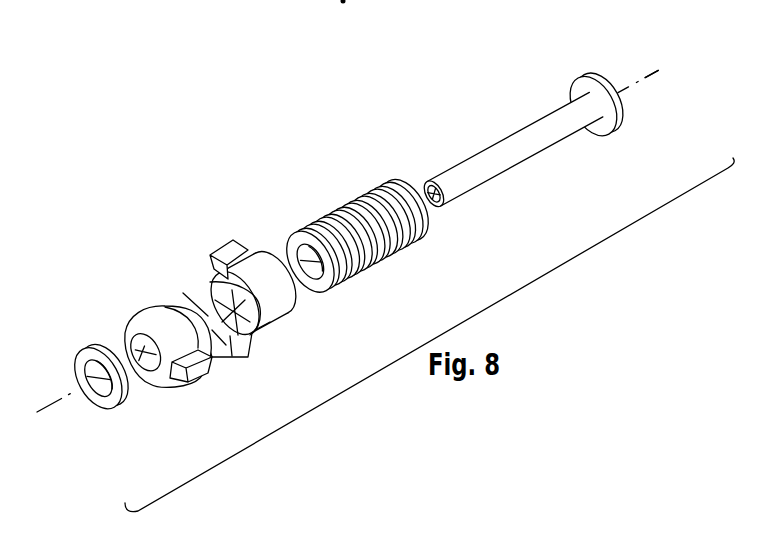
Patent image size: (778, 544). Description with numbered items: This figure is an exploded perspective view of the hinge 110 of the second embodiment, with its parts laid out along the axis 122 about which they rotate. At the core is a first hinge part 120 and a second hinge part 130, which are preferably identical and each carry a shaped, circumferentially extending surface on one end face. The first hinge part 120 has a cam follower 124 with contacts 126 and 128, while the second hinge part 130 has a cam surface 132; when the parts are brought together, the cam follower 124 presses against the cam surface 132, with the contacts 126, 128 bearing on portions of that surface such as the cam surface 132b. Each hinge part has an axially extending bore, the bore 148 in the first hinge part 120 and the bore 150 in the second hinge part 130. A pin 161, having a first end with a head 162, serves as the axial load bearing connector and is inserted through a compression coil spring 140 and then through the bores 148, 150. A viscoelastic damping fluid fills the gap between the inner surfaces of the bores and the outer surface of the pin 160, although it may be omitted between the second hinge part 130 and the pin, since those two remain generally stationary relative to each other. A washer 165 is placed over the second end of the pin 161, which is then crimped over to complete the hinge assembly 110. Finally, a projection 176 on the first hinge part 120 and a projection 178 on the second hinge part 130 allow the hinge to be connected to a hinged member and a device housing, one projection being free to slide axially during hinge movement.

The hinge 110 is at (309, 195).
The first hinge part 120 is at (277, 322).
The axis 122 is at (657, 72).
The cam follower 124 is at (250, 333).
The contact 126 is at (210, 283).
The contact 128 is at (228, 340).
The second hinge part 130 is at (140, 347).
The cam surface 132 is at (183, 293).
The cam surface 132b is at (215, 352).
The compression coil spring 140 is at (360, 197).
The bore 148 is at (257, 333).
The bore 150 is at (126, 358).
The pin 160 is at (500, 140).
The pin 161 is at (549, 137).
The head 162 is at (587, 76).
The washer 165 is at (120, 406).
The projection 176 is at (236, 250).
The projection 178 is at (200, 390).